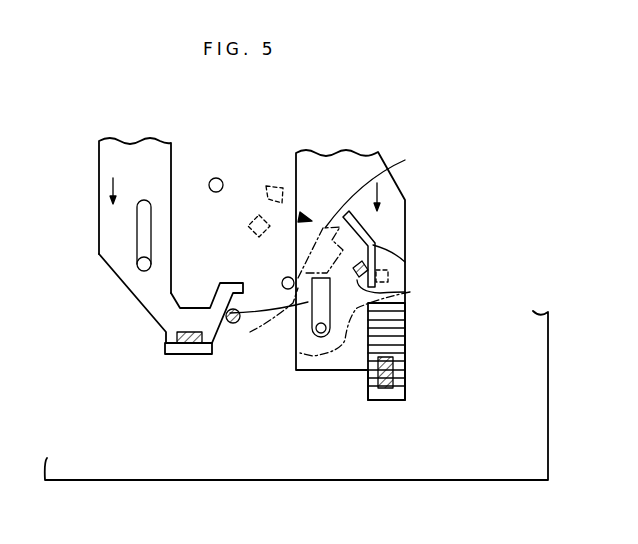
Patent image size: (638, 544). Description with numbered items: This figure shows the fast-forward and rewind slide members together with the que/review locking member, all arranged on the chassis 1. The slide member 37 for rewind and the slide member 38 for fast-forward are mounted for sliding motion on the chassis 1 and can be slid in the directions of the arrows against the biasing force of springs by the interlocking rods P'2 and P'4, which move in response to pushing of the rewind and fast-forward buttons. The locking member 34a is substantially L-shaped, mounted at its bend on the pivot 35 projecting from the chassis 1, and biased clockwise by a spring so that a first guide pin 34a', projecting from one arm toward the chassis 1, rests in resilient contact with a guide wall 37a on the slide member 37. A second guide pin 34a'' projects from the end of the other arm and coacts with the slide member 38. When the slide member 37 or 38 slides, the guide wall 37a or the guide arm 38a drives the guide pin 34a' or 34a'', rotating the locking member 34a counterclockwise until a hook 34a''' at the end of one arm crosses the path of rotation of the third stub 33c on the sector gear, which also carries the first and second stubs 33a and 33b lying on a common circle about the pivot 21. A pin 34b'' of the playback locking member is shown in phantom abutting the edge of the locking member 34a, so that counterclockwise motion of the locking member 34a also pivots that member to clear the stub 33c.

The chassis 1 is at (536, 418).
The pivot 21 is at (211, 179).
The first engaging stub 33a is at (272, 185).
The second engaging stub 33b is at (256, 214).
The third engaging stub 33c is at (305, 216).
The locking member 34a is at (383, 363).
The first guide pin 34a' is at (409, 285).
The second guide pin 34a'' is at (245, 354).
The hook 34a''' is at (384, 182).
The pin 34b'' is at (291, 300).
The pivot 35 is at (318, 336).
The slide member 37 is at (397, 263).
The guide wall 37a is at (374, 243).
The slide member 38 is at (99, 254).
The guide arm 38a is at (238, 283).
The interlocking rod P'4 is at (162, 358).
The interlocking rod P'2 is at (392, 395).